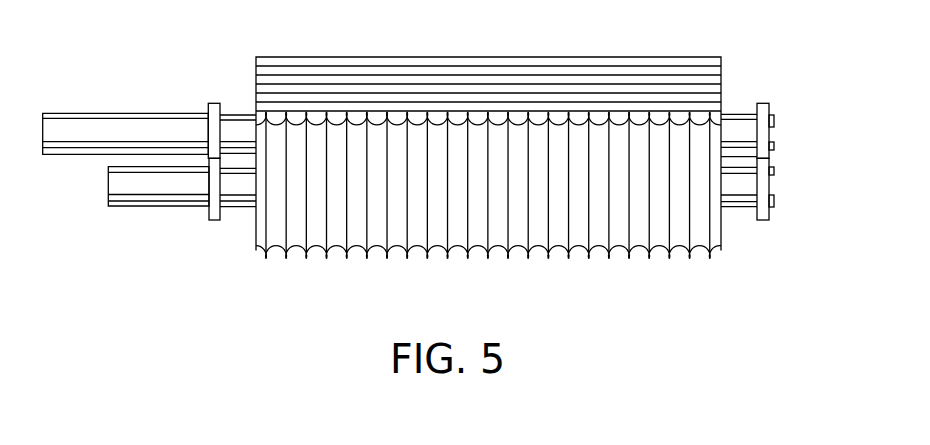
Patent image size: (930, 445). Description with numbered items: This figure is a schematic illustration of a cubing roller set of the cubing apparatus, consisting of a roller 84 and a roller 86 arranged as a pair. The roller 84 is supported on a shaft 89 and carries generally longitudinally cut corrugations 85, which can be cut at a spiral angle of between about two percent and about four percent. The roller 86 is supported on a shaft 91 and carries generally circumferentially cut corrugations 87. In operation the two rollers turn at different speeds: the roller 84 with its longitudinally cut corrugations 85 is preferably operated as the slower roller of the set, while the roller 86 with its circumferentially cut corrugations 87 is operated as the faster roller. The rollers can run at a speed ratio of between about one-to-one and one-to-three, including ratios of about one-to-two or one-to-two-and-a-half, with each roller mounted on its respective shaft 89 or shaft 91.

The roller 84 is at (598, 73).
The longitudinally cut corrugations 85 is at (533, 80).
The roller 86 is at (556, 232).
The circumferentially cut corrugations 87 is at (628, 232).
The shaft 89 is at (242, 129).
The shaft 91 is at (242, 189).